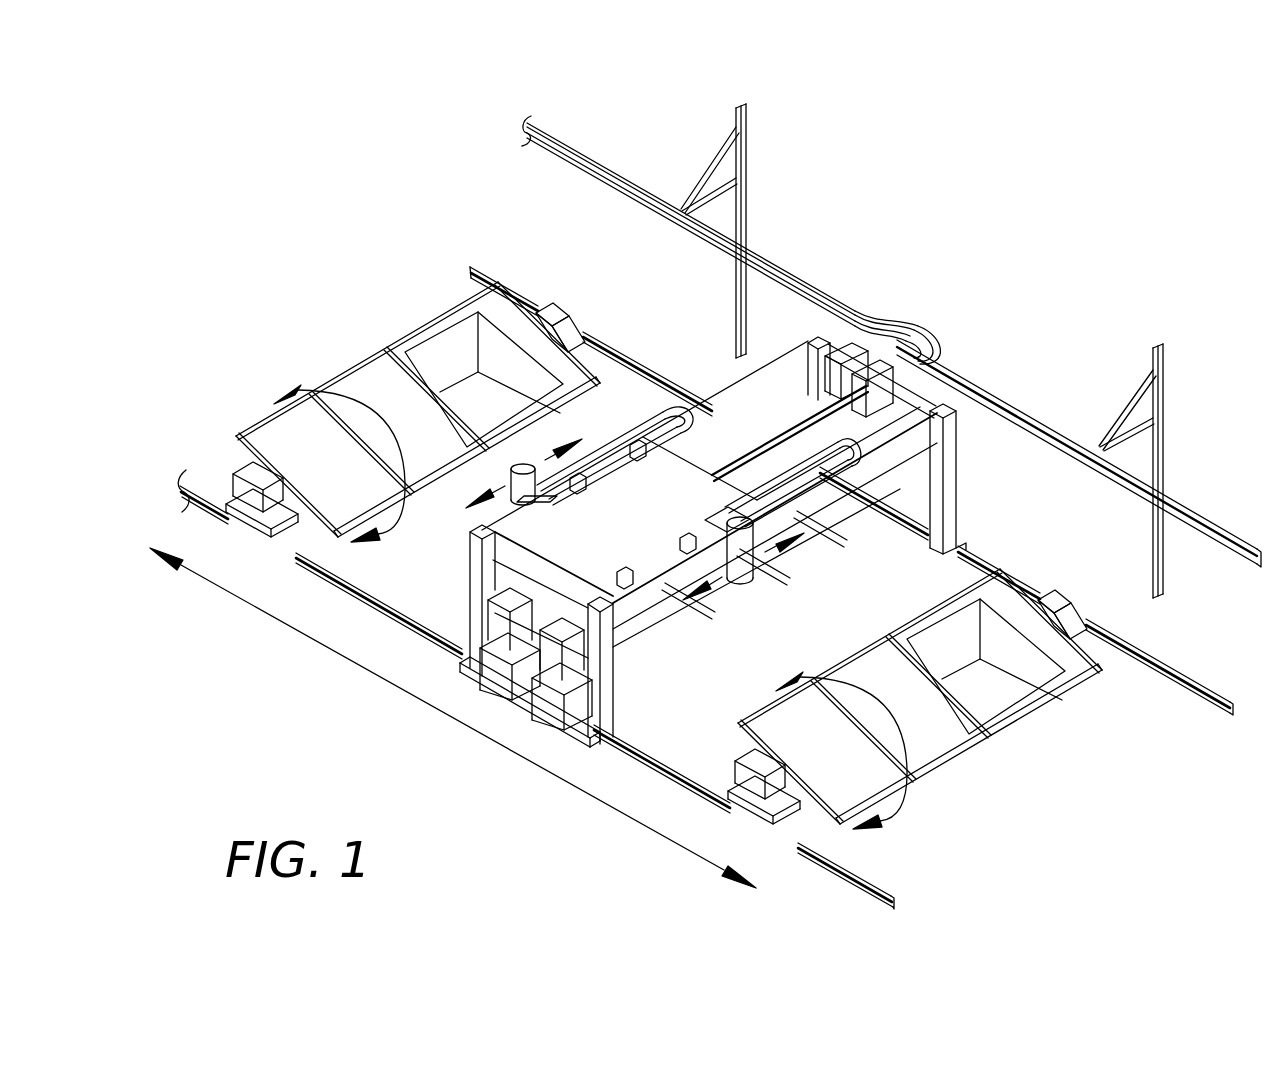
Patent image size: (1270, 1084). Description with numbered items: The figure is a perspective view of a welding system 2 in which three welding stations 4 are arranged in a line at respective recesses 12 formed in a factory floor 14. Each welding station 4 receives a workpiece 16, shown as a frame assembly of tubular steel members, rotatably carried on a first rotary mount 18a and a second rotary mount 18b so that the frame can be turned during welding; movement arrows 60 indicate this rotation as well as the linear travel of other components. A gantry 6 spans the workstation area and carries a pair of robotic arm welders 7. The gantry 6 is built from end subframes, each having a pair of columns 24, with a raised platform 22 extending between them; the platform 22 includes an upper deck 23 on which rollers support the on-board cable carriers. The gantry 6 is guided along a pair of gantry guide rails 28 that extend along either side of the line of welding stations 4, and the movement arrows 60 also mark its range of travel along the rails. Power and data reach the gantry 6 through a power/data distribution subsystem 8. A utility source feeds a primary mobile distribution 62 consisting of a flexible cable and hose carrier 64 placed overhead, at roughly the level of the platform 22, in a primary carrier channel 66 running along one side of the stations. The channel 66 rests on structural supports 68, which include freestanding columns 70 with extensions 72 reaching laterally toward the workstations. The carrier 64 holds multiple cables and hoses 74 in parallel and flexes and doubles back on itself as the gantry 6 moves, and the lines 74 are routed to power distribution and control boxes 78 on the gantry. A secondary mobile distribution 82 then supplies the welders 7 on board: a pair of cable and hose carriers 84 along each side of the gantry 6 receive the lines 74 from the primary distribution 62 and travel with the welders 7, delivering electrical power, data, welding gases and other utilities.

The welding system 2 is at (891, 351).
The welding station 4 is at (669, 534).
The gantry 6 is at (715, 530).
The robotic arm welder 7 is at (548, 521).
The power/data distribution subsystem 8 is at (891, 341).
The recess 12 is at (435, 367).
The factory floor 14 is at (1005, 802).
The workpiece 16 is at (242, 430).
The first rotary mount 18a is at (283, 472).
The second rotary mount 18b is at (550, 305).
The raised platform 22 is at (738, 385).
The upper deck 23 is at (631, 510).
The column 24 is at (474, 622).
The gantry guide rail 28 is at (1160, 656).
The movement arrow 60 is at (566, 442).
The primary mobile distribution 62 is at (868, 297).
The cable and hose carrier 64 is at (945, 345).
The primary carrier channel 66 is at (1012, 405).
The structural support 68 is at (746, 120).
The freestanding column 70 is at (747, 192).
The extension 72 is at (716, 172).
The cables and hoses 74 is at (845, 418).
The power distribution and control box 78 is at (826, 375).
The secondary mobile distribution 82 is at (688, 477).
The cable and hose carrier 84 is at (693, 414).